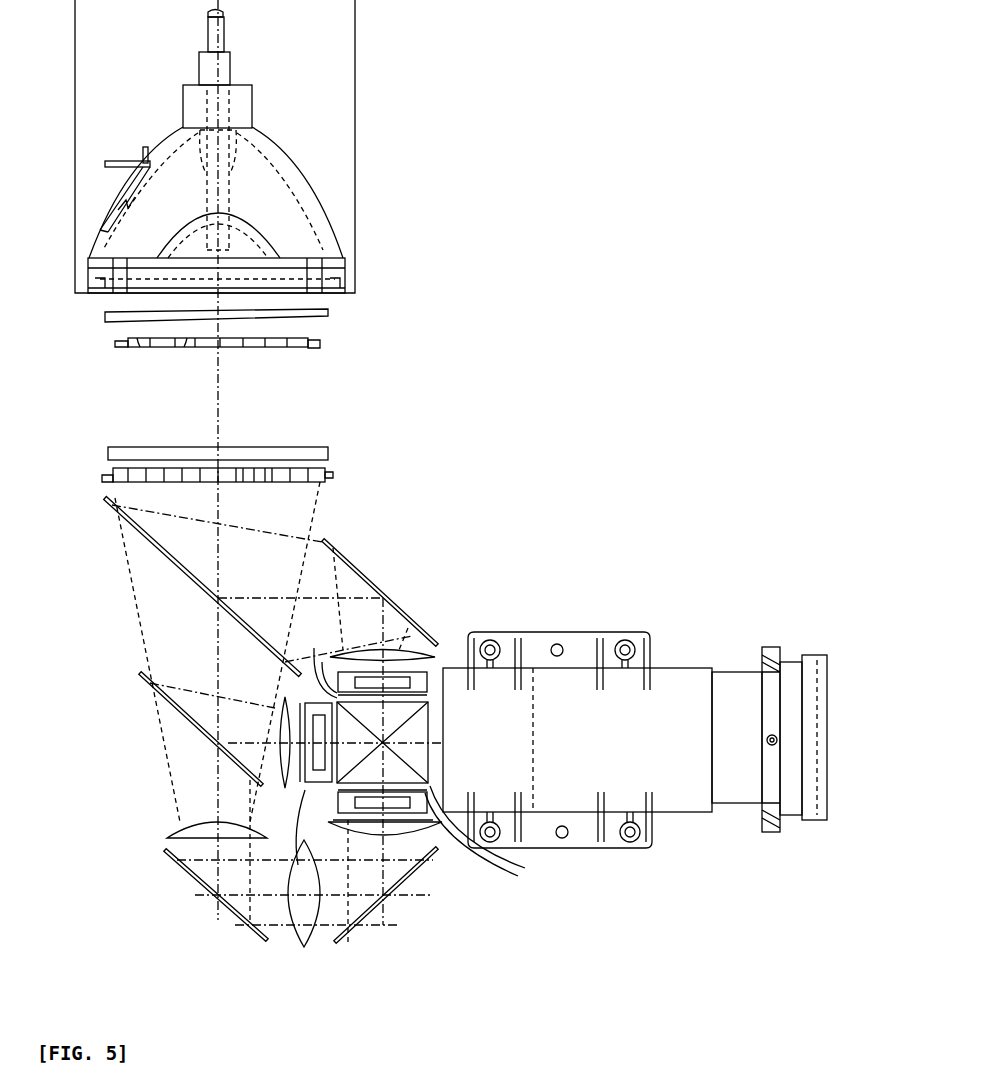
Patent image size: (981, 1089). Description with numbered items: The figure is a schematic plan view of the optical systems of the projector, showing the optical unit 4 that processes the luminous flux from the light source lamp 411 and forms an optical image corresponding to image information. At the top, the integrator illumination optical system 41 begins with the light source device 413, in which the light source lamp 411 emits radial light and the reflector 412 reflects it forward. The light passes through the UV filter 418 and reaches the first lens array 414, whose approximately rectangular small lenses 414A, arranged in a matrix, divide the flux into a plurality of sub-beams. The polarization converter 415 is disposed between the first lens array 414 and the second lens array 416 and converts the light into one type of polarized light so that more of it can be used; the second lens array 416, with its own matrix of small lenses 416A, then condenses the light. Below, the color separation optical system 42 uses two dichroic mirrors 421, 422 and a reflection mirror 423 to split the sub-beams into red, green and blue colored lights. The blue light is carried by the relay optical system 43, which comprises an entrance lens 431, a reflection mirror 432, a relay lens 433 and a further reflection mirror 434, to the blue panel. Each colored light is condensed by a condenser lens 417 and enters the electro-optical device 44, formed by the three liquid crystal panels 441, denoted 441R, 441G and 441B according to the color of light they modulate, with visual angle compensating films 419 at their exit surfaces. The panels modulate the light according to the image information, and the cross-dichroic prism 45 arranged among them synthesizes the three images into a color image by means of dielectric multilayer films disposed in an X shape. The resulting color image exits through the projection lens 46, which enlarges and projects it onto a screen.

The optical unit 4 is at (540, 262).
The integrator illumination optical system 41 is at (383, 372).
The light source lamp 411 is at (228, 192).
The reflector 412 is at (313, 202).
The light source device 413 is at (428, 118).
The first lens array 414 is at (257, 347).
The small lenses 414A is at (187, 348).
The polarization converter 415 is at (280, 452).
The second lens array 416 is at (310, 482).
The small lenses 416A is at (265, 482).
The condenser lenses 417 is at (400, 650).
The UV filter 418 is at (322, 311).
The visual angle compensating films 419 is at (315, 655).
The color separation optical system 42 is at (115, 608).
The dichroic mirror 421 is at (183, 568).
The dichroic mirror 422 is at (142, 678).
The reflection mirror 423 is at (350, 565).
The relay optical system 43 is at (218, 925).
The entrance lens 431 is at (167, 832).
The reflection mirror 432 is at (180, 860).
The relay lens 433 is at (304, 948).
The reflection mirror 434 is at (378, 910).
The electro-optical device 44 is at (432, 677).
The liquid crystal panels 441 is at (412, 768).
The liquid crystal panel 441R is at (428, 708).
The liquid crystal panel 441G is at (332, 826).
The liquid crystal panel 441B is at (428, 768).
The cross-dichroic prism 45 is at (428, 740).
The projection lens 46 is at (730, 688).